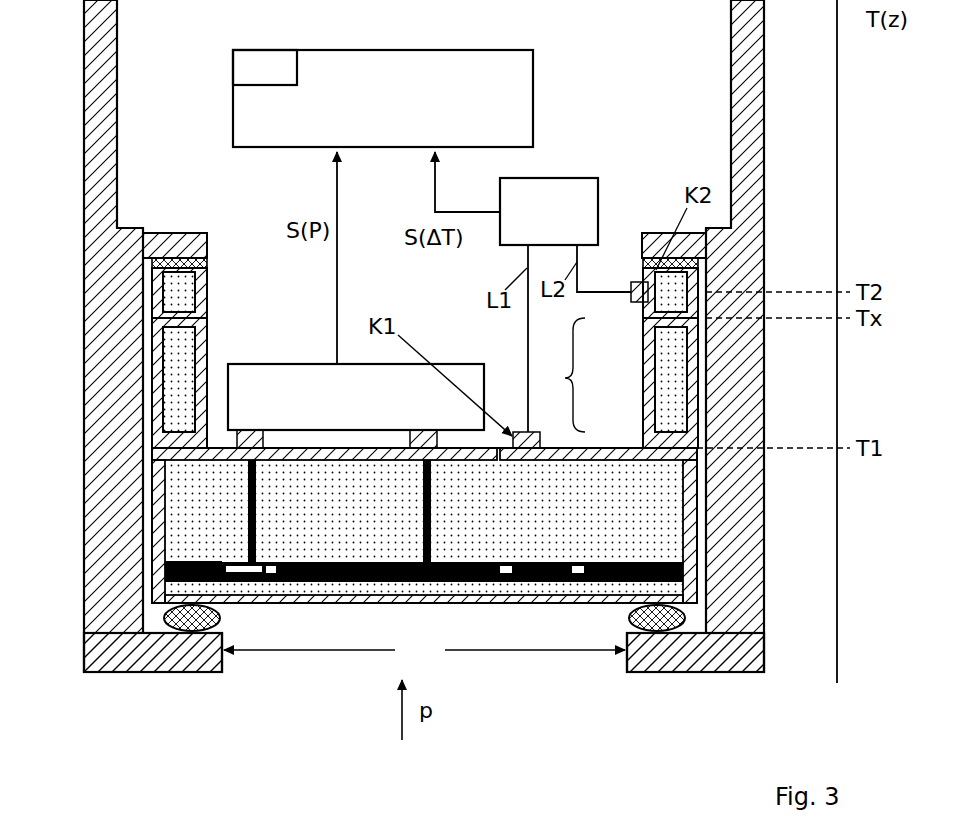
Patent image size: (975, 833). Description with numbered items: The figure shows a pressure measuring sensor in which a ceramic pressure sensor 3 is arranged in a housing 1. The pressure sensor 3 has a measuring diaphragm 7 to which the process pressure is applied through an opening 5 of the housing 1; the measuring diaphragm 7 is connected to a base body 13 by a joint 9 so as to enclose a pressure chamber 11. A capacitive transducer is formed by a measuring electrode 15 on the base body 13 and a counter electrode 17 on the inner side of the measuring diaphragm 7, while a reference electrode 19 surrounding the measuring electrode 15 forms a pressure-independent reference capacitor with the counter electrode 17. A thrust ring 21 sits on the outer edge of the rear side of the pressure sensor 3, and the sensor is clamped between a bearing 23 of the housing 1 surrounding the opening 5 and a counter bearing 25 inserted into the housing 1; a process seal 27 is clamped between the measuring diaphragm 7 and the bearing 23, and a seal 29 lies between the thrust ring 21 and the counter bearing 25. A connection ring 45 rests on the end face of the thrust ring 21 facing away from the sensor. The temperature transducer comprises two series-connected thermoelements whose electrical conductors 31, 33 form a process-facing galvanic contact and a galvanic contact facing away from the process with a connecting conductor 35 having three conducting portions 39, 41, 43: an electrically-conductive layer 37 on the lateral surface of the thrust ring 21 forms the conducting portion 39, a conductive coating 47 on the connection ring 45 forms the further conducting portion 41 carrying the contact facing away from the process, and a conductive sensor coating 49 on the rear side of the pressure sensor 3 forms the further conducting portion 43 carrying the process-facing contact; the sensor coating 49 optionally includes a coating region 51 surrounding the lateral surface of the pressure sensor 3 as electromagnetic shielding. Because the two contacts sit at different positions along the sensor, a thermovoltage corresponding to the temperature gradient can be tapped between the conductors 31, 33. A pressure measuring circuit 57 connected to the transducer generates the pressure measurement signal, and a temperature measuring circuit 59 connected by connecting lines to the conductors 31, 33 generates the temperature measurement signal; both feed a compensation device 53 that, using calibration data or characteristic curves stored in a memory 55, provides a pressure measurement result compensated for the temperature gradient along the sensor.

The housing 1 is at (122, 398).
The pressure sensor 3 is at (428, 559).
The opening 5 is at (430, 661).
The measuring diaphragm 7 is at (456, 592).
The joint 9 is at (190, 572).
The pressure chamber 11 is at (452, 633).
The base body 13 is at (620, 517).
The measuring electrode 15 is at (505, 577).
The counter electrode 17 is at (546, 580).
The reference electrode 19 is at (247, 560).
The thrust ring 21 is at (366, 358).
The bearing 23 is at (183, 660).
The counter bearing 25 is at (185, 250).
The process seal 27 is at (175, 630).
The seal 29 is at (172, 263).
The electrical conductor 31 is at (527, 428).
The electrical conductor 33 is at (640, 295).
The connecting conductor 35 is at (561, 375).
The electrically-conductive layer 37 is at (652, 407).
The conducting portion 39 is at (632, 379).
The further conducting portion 41 is at (632, 314).
The further conducting portion 43 is at (424, 430).
The connection ring 45 is at (361, 308).
The conductive coating 47 is at (653, 307).
The sensor coating 49 is at (582, 460).
The coating region 51 is at (692, 530).
The compensation device 53 is at (404, 112).
The memory 55 is at (277, 81).
The pressure measuring circuit 57 is at (351, 411).
The temperature measuring circuit 59 is at (562, 226).